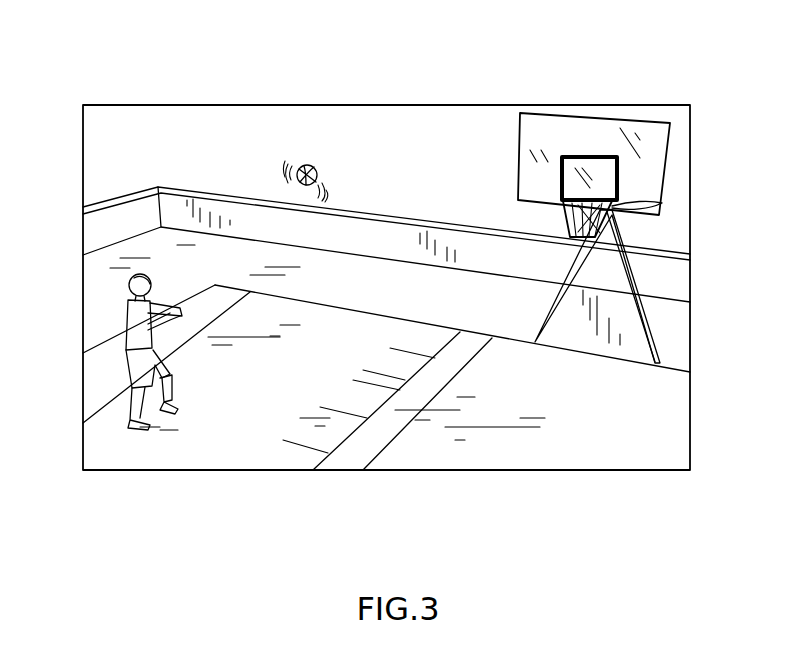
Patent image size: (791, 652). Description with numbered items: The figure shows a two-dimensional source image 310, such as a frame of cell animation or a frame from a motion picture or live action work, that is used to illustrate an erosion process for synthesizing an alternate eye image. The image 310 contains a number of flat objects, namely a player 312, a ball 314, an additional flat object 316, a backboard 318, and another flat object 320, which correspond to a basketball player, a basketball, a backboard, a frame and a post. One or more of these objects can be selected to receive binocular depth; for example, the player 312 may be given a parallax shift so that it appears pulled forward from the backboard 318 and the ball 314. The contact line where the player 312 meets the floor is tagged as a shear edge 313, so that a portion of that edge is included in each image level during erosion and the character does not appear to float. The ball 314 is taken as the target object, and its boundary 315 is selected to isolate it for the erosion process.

The source image 310 is at (233, 105).
The player 312 is at (118, 302).
The shear edge 313 is at (160, 437).
The ball 314 is at (320, 167).
The object boundary 315 is at (318, 172).
The flat object 316 is at (582, 113).
The backboard 318 is at (662, 203).
The flat object 320 is at (623, 233).